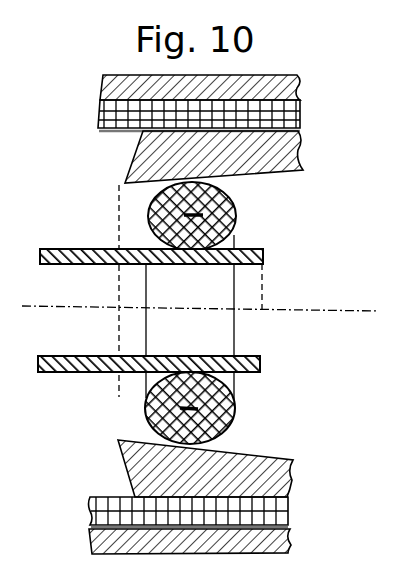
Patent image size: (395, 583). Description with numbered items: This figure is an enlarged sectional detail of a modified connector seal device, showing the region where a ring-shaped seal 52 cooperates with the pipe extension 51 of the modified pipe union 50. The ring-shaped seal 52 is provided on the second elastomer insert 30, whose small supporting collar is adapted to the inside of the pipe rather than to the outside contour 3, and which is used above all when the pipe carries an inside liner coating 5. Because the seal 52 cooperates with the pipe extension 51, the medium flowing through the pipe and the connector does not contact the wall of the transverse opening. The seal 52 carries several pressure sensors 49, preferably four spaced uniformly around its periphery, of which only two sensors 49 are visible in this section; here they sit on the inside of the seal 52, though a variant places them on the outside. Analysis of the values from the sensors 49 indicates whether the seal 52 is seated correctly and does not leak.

The outside contour 3 is at (297, 93).
The inside liner coating 5 is at (298, 122).
The second elastomer insert 30 is at (258, 175).
The pressure sensors 49 is at (242, 266).
The modified pipe union 50 is at (58, 385).
The pipe extension 51 is at (63, 248).
The ring-shaped seal 52 is at (200, 218).